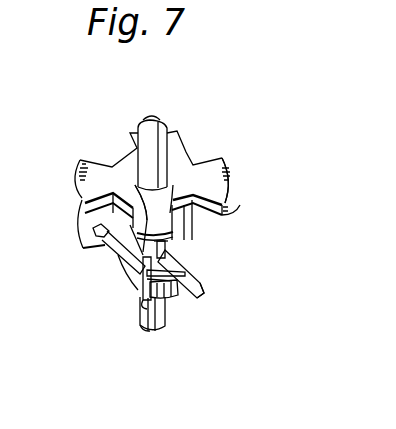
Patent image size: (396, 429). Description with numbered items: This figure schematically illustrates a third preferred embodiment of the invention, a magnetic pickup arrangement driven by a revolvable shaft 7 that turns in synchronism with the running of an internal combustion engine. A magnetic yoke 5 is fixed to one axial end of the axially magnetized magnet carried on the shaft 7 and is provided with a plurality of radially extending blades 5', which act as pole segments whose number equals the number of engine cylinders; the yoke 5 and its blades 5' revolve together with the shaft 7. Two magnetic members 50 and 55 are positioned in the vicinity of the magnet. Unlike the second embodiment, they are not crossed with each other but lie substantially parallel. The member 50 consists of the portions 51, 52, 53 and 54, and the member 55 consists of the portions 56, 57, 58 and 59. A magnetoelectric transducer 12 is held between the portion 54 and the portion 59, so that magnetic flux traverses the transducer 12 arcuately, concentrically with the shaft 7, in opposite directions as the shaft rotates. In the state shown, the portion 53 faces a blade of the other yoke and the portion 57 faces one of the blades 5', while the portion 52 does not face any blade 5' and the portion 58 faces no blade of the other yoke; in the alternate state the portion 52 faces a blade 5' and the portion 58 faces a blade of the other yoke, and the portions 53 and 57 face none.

The magnetic yoke 5 is at (157, 184).
The blade 5' is at (244, 174).
The revolvable shaft 7 is at (150, 122).
The magnetoelectric transducer 12 is at (153, 328).
The magnetic member 50 is at (104, 256).
The portion 51 is at (118, 270).
The portion 52 is at (93, 230).
The portion 53 is at (136, 308).
The portion 54 is at (135, 185).
The magnetic member 55 is at (200, 278).
The portion 56 is at (186, 263).
The portion 57 is at (170, 246).
The portion 58 is at (205, 288).
The portion 59 is at (168, 287).